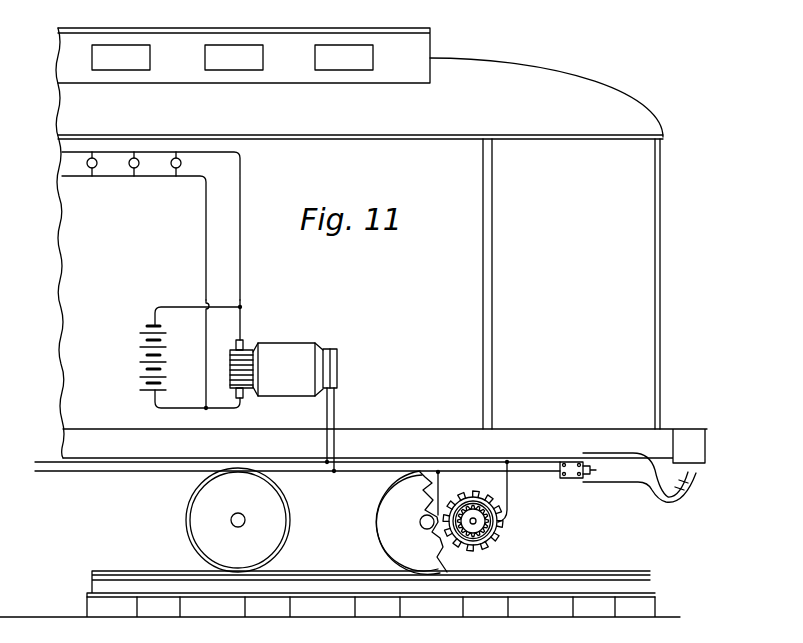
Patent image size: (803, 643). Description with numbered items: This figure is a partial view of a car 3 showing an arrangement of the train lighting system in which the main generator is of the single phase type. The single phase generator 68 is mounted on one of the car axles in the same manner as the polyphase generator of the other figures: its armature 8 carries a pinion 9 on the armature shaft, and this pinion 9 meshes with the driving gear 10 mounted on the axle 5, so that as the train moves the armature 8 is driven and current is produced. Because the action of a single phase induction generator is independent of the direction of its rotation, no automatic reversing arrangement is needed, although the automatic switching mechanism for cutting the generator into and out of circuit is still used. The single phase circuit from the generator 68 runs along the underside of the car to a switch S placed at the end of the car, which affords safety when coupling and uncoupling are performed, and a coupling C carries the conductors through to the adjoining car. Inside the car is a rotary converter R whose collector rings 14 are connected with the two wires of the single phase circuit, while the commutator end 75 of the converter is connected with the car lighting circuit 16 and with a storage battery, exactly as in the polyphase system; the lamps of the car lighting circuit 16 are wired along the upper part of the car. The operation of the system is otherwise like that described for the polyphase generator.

The car 3 is at (287, 50).
The car lighting circuit 16 is at (161, 170).
The commutator 75 is at (253, 387).
The rotary converter R is at (290, 350).
The collector rings 14 is at (338, 367).
The front axle 5 is at (420, 521).
The driving gear 10 is at (408, 548).
The armature 8 is at (498, 512).
The single phase generator 68 is at (498, 540).
The pinion 9 is at (490, 547).
The switch S is at (572, 479).
The coupling C is at (694, 476).